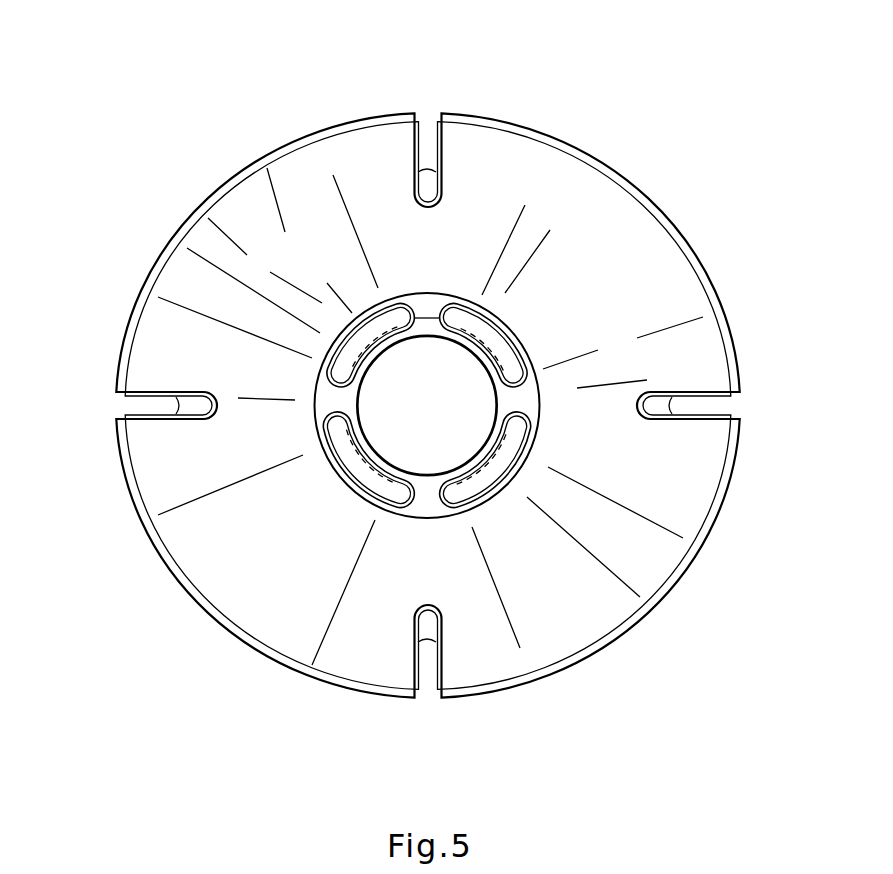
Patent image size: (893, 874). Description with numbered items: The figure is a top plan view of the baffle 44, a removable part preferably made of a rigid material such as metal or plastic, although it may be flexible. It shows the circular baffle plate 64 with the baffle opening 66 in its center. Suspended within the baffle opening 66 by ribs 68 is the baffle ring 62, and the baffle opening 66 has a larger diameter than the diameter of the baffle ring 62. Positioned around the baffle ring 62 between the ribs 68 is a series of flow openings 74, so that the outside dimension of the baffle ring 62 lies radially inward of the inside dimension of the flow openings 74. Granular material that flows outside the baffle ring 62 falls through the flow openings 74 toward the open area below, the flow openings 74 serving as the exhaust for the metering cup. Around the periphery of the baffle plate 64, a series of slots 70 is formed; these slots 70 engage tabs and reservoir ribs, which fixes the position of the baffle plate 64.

The baffle 44 is at (186, 134).
The baffle ring 62 is at (483, 346).
The baffle plate 64 is at (620, 212).
The baffle opening 66 is at (442, 450).
The ribs 68 is at (428, 326).
The slots 70 is at (429, 122).
The flow openings 74 is at (360, 337).